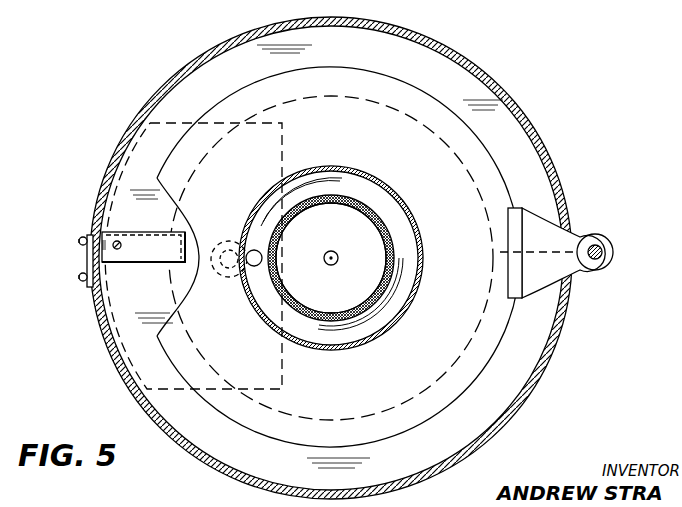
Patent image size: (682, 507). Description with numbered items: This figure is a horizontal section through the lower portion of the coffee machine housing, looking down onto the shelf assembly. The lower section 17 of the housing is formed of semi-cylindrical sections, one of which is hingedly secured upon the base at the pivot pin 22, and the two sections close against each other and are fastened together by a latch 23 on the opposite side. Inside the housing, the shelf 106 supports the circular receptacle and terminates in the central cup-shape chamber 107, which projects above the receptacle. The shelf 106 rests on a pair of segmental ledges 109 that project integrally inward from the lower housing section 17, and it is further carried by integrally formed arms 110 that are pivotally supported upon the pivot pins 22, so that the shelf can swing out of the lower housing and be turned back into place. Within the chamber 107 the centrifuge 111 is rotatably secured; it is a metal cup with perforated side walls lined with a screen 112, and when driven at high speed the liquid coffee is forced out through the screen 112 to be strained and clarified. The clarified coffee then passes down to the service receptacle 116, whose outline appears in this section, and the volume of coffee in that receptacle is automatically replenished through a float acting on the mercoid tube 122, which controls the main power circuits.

The lower section of the machine housing 17 is at (537, 128).
The pivot pin 22 is at (598, 249).
The latch 23 is at (90, 238).
The shelf 106 is at (390, 88).
The cup-shape chamber 107 is at (403, 203).
The segmental ledges 109 is at (152, 285).
The arms 110 is at (533, 233).
The centrifuge 111 is at (350, 200).
The screen 112 is at (358, 215).
The service receptacle 116 is at (283, 147).
The mercoid tube 122 is at (175, 243).